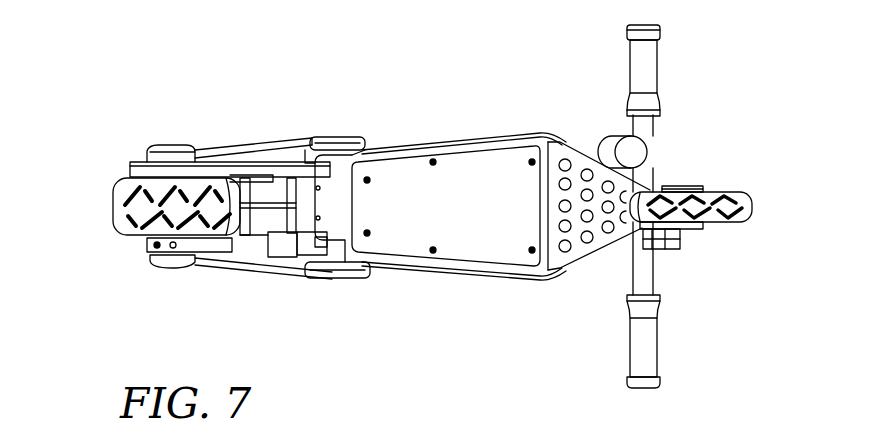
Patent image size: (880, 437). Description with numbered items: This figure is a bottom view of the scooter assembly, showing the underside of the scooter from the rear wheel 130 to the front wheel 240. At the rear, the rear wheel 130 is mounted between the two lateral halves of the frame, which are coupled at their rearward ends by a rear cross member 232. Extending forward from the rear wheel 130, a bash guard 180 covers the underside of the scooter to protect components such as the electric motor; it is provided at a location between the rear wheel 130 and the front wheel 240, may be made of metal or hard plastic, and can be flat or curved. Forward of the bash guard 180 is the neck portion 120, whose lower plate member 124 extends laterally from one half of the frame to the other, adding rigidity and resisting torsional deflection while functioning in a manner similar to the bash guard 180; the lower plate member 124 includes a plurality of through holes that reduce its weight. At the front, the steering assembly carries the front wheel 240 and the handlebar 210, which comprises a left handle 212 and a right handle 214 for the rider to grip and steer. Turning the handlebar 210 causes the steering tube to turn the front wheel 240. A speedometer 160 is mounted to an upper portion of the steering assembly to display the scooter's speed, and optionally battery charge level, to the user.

The rear wheel 130 is at (120, 209).
The rear cross member 232 is at (342, 193).
The neck portion 120 is at (584, 158).
The lower plate member 124 is at (588, 250).
The speedometer 160 is at (632, 146).
The handlebar 210 is at (650, 155).
The right handle 214 is at (648, 62).
The left handle 212 is at (648, 348).
The front wheel 240 is at (752, 205).
The bash guard 180 is at (410, 218).